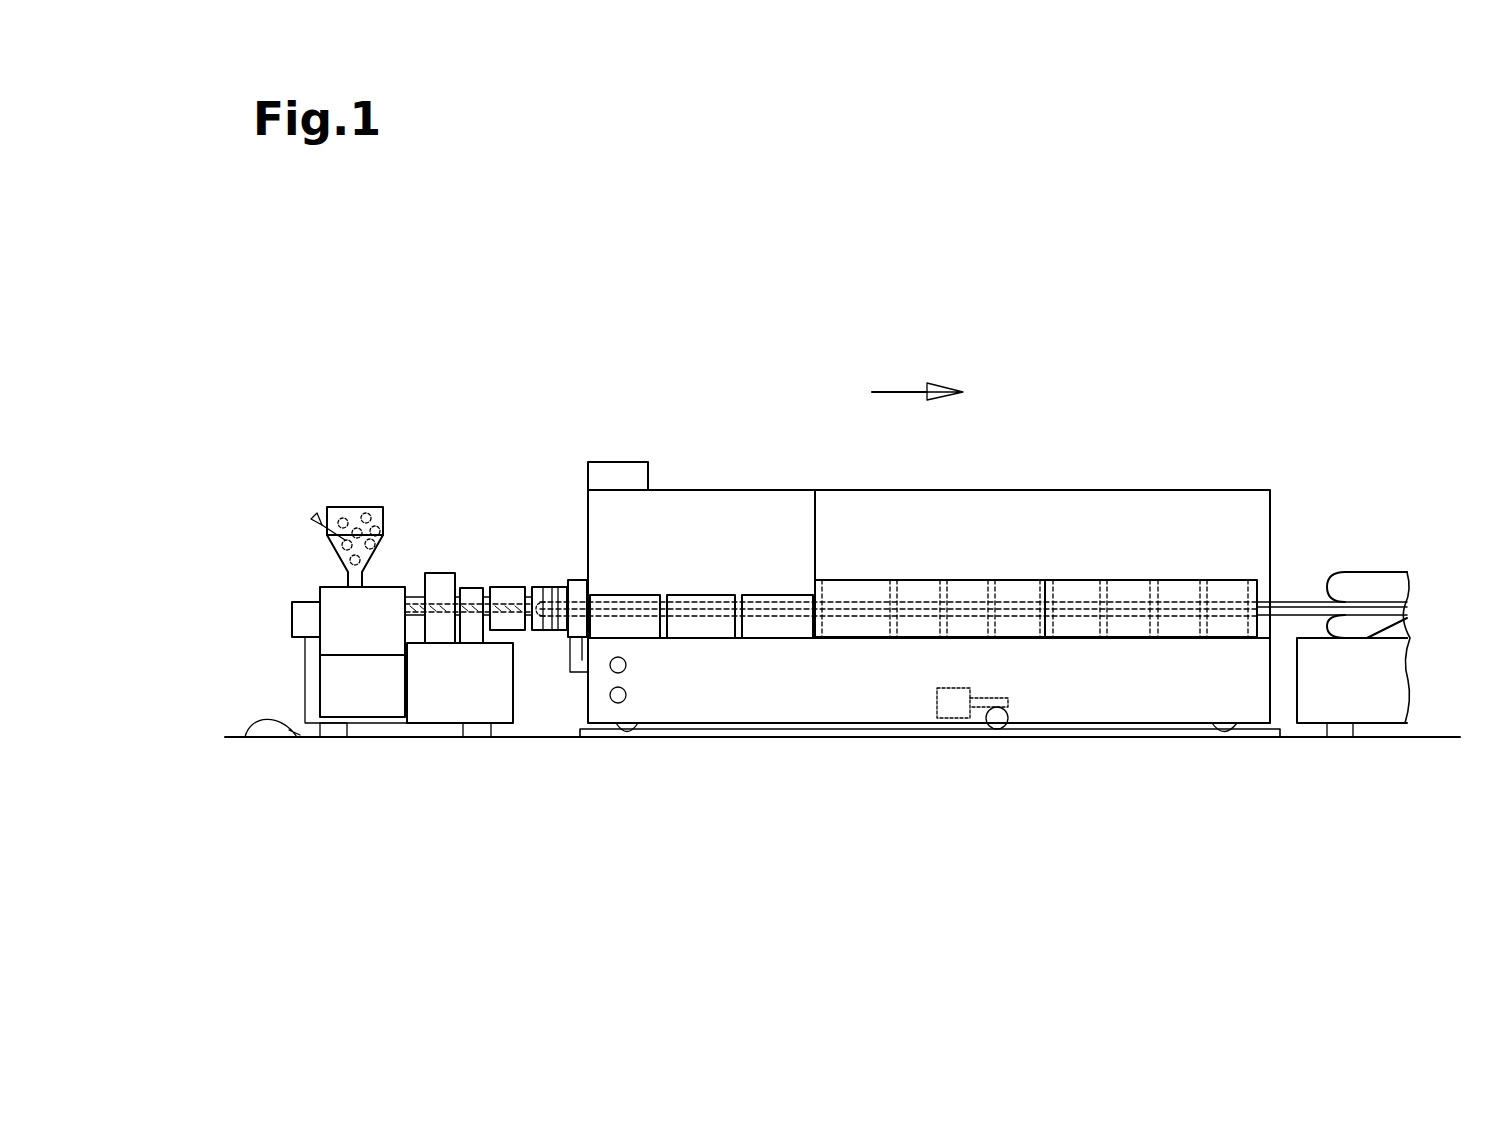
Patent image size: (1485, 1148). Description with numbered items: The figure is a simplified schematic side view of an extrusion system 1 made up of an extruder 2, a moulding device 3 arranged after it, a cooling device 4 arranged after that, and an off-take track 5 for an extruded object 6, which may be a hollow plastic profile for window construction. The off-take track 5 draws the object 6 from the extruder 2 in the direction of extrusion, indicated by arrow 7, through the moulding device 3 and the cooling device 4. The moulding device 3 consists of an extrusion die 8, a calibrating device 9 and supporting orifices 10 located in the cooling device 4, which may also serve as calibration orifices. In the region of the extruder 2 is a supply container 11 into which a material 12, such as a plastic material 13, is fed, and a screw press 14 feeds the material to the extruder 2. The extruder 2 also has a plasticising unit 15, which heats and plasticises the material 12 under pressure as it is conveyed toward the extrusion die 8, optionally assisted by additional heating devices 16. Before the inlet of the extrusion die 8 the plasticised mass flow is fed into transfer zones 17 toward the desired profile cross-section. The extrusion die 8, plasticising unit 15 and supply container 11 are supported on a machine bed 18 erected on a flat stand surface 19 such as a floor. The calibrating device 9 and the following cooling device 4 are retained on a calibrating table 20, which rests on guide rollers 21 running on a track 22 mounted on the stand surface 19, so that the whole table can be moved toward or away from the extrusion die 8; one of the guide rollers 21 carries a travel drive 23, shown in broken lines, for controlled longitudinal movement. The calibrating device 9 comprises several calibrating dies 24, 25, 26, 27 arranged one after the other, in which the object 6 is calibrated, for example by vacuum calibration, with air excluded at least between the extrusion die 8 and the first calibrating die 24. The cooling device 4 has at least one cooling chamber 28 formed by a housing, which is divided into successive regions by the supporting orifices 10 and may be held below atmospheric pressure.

The extrusion system 1 is at (572, 253).
The extruder 2 is at (413, 487).
The moulding device 3 is at (670, 523).
The cooling device 4 is at (1050, 557).
The off-take track 5 is at (1375, 585).
The extruded object 6 is at (1295, 605).
The arrow 7 is at (903, 390).
The extrusion die 8 is at (563, 580).
The calibrating device 9 is at (728, 650).
The supporting orifices 10 is at (937, 617).
The supply container 11 is at (332, 515).
The material 12 is at (322, 525).
The plastic material 13 is at (368, 508).
The screw press 14 is at (512, 617).
The plasticising unit 15 is at (470, 577).
The additional heating devices 16 is at (508, 580).
The transfer zones 17 is at (553, 630).
The machine bed 18 is at (425, 708).
The stand surface 19 is at (245, 737).
The calibrating table 20 is at (840, 700).
The guide rollers 21 is at (637, 732).
The track 22 is at (1063, 735).
The travel drive 23 is at (953, 702).
The first calibrating die 24 is at (578, 580).
The calibrating die 25 is at (641, 597).
The calibrating die 26 is at (700, 597).
The calibrating die 27 is at (768, 597).
The cooling chamber 28 is at (1177, 590).